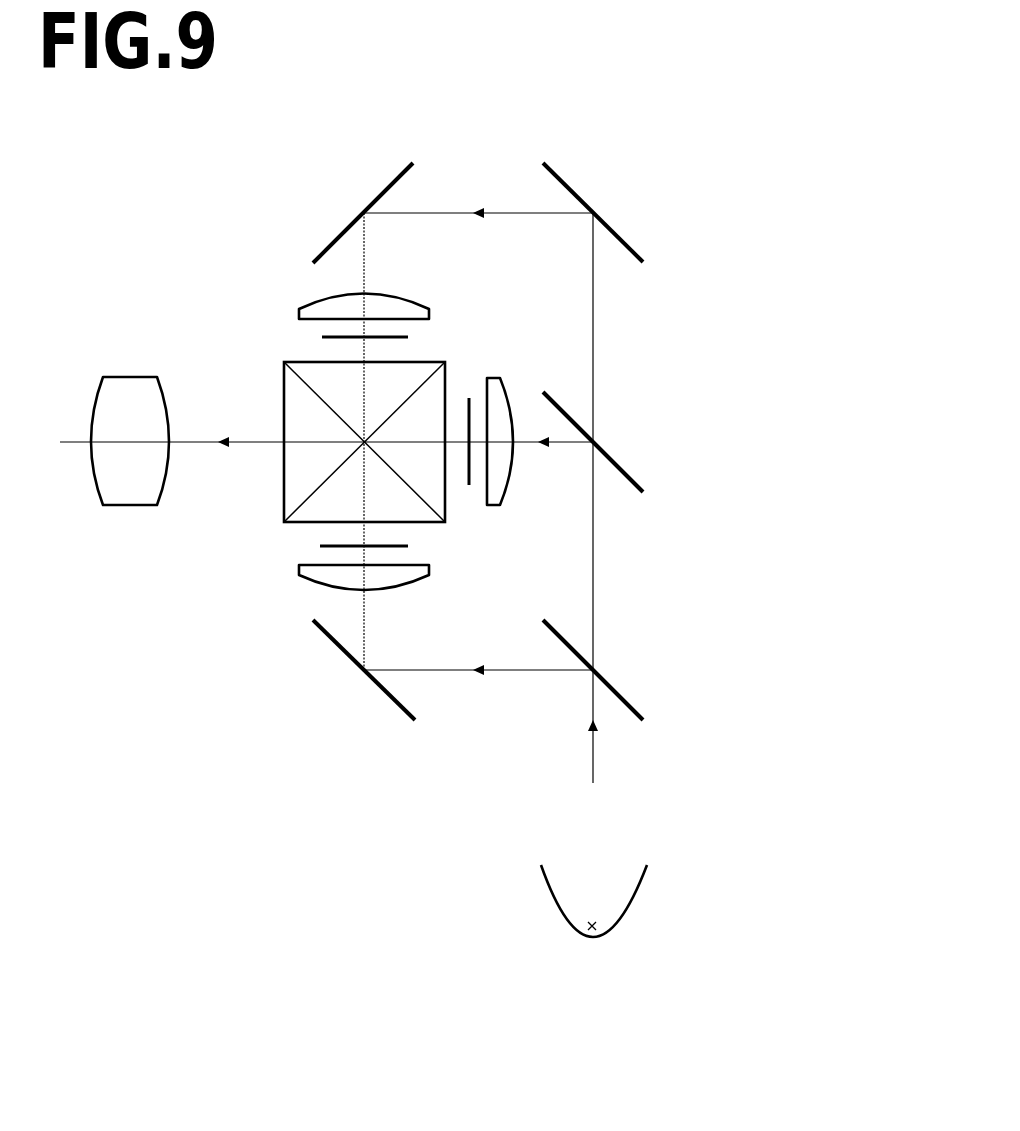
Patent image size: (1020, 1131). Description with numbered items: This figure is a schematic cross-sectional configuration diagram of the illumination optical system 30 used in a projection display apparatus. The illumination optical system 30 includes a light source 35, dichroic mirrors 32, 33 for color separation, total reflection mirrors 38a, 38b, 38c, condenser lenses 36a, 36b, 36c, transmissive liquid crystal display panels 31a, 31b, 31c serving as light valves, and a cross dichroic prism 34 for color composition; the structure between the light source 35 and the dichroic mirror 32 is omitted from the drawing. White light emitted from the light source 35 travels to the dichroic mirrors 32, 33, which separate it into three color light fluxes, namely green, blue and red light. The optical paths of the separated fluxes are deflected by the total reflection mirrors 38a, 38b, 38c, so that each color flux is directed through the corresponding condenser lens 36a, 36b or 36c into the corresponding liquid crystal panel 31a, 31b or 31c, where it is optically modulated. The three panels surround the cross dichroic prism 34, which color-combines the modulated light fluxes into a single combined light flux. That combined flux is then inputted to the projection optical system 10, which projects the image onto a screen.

The projection optical system 10 is at (125, 505).
The illumination optical system 30 is at (620, 92).
The transmissive liquid crystal display panel 31a is at (332, 545).
The transmissive liquid crystal display panel 31b is at (466, 397).
The transmissive liquid crystal display panel 31c is at (328, 337).
The dichroic mirror 32 is at (625, 699).
The dichroic mirror 33 is at (623, 471).
The cross dichroic prism 34 is at (293, 477).
The light source 35 is at (646, 888).
The condenser lens 36a is at (403, 586).
The condenser lens 36b is at (509, 483).
The condenser lens 36c is at (424, 271).
The total reflection mirror 38a is at (335, 643).
The total reflection mirror 38b is at (622, 241).
The total reflection mirror 38c is at (335, 241).